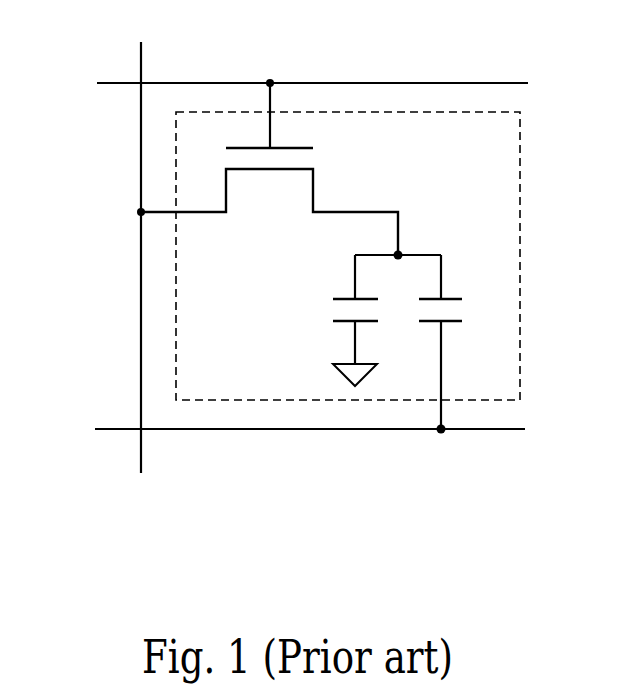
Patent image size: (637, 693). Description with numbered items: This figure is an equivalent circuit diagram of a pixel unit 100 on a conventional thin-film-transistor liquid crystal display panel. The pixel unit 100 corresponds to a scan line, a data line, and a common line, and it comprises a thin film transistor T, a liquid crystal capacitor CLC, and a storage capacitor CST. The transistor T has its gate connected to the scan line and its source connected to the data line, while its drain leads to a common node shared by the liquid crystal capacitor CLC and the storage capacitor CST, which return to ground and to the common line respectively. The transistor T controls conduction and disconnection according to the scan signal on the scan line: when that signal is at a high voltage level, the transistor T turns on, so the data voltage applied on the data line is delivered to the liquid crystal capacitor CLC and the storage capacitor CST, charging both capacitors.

The pixel unit 100 is at (379, 256).
The thin film transistor T is at (267, 167).
The liquid crystal capacitor CLC is at (324, 320).
The storage capacitor CST is at (465, 344).